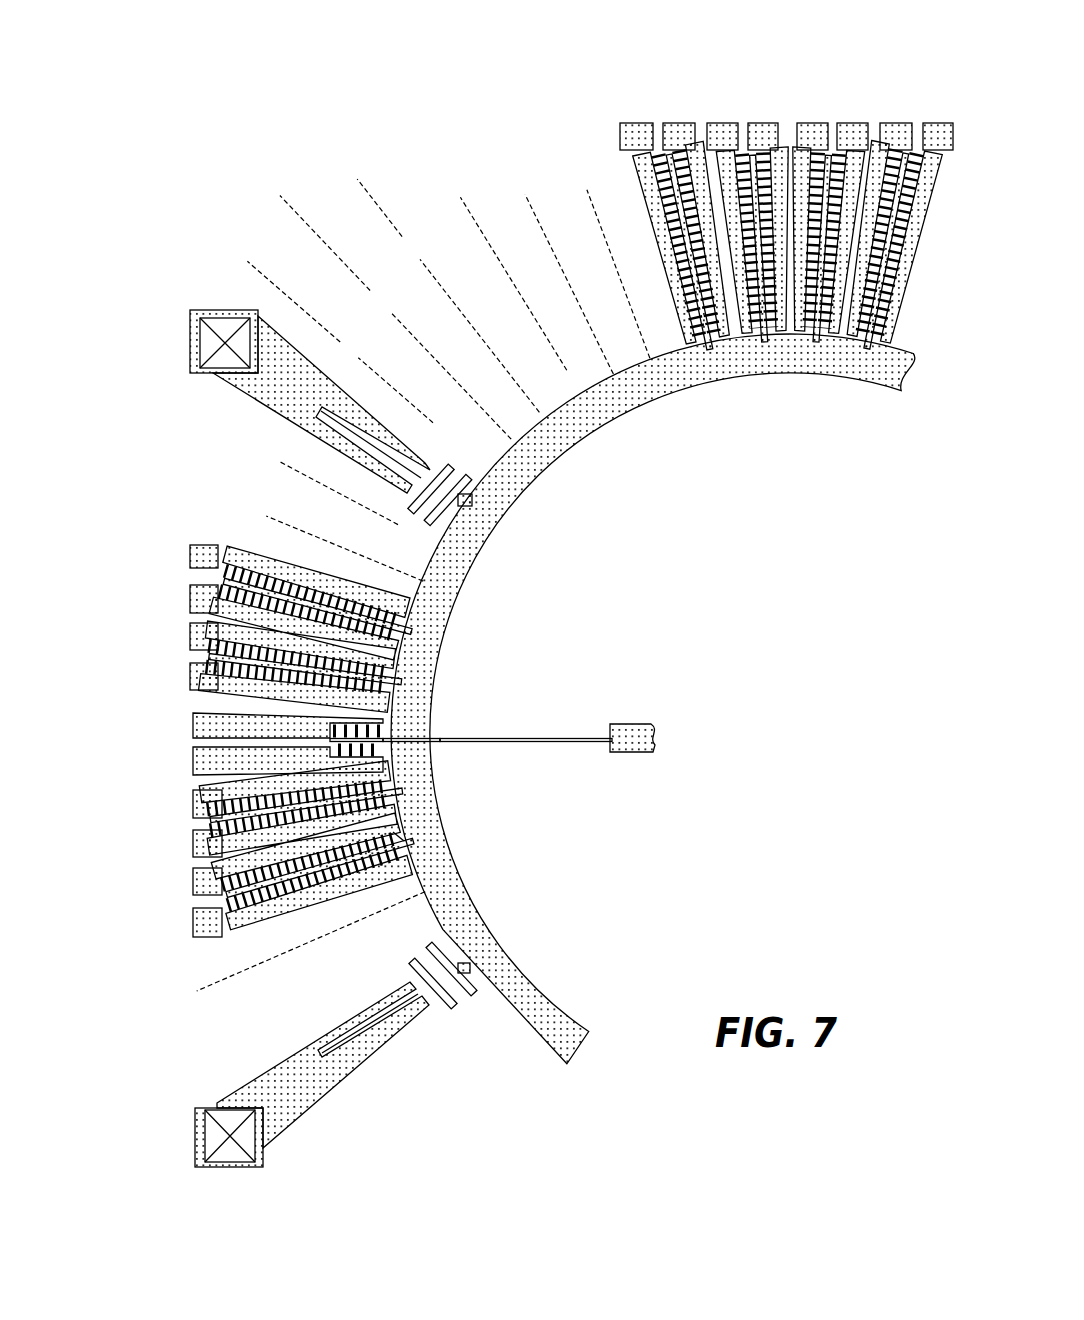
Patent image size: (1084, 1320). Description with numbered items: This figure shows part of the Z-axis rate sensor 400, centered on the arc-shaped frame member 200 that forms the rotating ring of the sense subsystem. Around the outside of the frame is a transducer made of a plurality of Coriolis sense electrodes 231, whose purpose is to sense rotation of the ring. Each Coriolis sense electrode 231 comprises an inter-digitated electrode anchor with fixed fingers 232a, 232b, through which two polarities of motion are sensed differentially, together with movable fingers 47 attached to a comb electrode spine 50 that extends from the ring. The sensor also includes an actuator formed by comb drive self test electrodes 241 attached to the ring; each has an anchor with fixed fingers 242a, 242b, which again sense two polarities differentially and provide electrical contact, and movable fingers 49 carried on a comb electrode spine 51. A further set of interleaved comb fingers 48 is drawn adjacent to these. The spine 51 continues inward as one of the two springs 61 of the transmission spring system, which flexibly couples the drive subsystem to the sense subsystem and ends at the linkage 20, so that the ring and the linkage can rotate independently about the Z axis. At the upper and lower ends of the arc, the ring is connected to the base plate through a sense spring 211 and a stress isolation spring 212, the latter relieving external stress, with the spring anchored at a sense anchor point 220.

The Z-axis rate sensor 400 is at (828, 62).
The rotor ring segment 200 is at (612, 407).
The Coriolis sense electrodes 231 is at (890, 213).
The fixed fingers 232a is at (190, 566).
The fixed fingers 232b is at (190, 611).
The movable fingers 47 is at (190, 652).
The comb drive self test electrodes 241 is at (383, 717).
The fixed fingers 242a is at (330, 740).
The fixed fingers 242b is at (193, 762).
The upper comb fingers 48 is at (383, 719).
The movable fingers 49 is at (383, 760).
The comb electrode spine 51 is at (383, 740).
The springs 61 is at (498, 740).
The linkage 20 is at (625, 743).
The comb electrode spine 50 is at (400, 837).
The sense anchor points 220 is at (230, 1118).
The sense spring 211 is at (362, 1038).
The stress isolation spring 212 is at (455, 995).